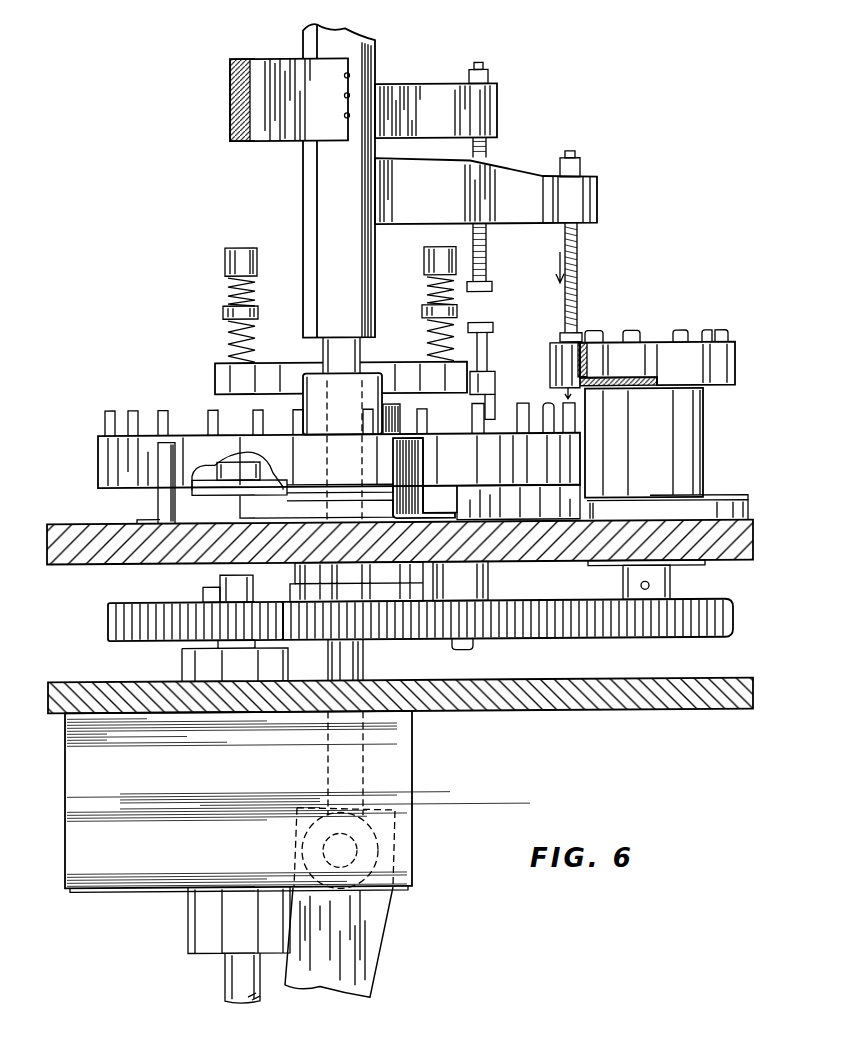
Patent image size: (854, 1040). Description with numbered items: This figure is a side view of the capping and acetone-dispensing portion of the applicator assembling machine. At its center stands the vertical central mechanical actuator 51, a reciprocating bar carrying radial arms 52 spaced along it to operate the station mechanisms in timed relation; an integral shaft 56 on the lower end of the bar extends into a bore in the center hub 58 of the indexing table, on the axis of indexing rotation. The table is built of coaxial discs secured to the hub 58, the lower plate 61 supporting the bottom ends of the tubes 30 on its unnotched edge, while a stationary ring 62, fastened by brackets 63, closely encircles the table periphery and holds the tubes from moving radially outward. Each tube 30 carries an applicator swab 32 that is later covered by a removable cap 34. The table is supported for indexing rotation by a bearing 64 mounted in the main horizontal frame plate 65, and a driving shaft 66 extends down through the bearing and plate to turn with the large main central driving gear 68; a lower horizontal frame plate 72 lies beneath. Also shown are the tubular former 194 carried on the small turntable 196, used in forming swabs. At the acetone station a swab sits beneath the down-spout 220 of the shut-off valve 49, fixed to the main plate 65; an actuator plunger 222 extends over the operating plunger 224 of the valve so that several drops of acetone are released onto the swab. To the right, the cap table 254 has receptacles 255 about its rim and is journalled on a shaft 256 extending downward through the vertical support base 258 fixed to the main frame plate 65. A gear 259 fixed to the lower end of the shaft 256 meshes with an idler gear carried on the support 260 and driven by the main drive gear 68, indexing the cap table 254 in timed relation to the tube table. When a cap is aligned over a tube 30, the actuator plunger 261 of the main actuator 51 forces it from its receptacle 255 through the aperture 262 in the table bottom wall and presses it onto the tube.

The tube 30 is at (170, 420).
The applicator swab 32 is at (553, 425).
The removable cap 34 is at (570, 352).
The shut-off valve 49 is at (497, 398).
The central mechanical actuator 51 is at (347, 242).
The radial arms 52 is at (417, 100).
The shaft 56 is at (352, 352).
The center hub 58 is at (312, 373).
The lower plate 61 is at (247, 485).
The stationary ring 62 is at (118, 470).
The brackets 63 is at (160, 500).
The bearing 64 is at (337, 495).
The main horizontal frame plate 65 is at (753, 531).
The driving shaft 66 is at (240, 461).
The main central driving gear 68 is at (377, 630).
The lower horizontal frame plate 72 is at (647, 680).
The tubular former 194 is at (220, 298).
The small turntable 196 is at (222, 382).
The down-spout 220 is at (497, 378).
The actuator plunger 222 is at (493, 286).
The operating plunger 224 is at (497, 326).
The table 254 is at (735, 365).
The receptacles 255 is at (633, 344).
The shaft 256 is at (672, 583).
The vertical support base 258 is at (700, 447).
The gear 259 is at (688, 625).
The support 260 is at (492, 588).
The actuator plunger 261 is at (578, 293).
The aperture 262 is at (585, 392).